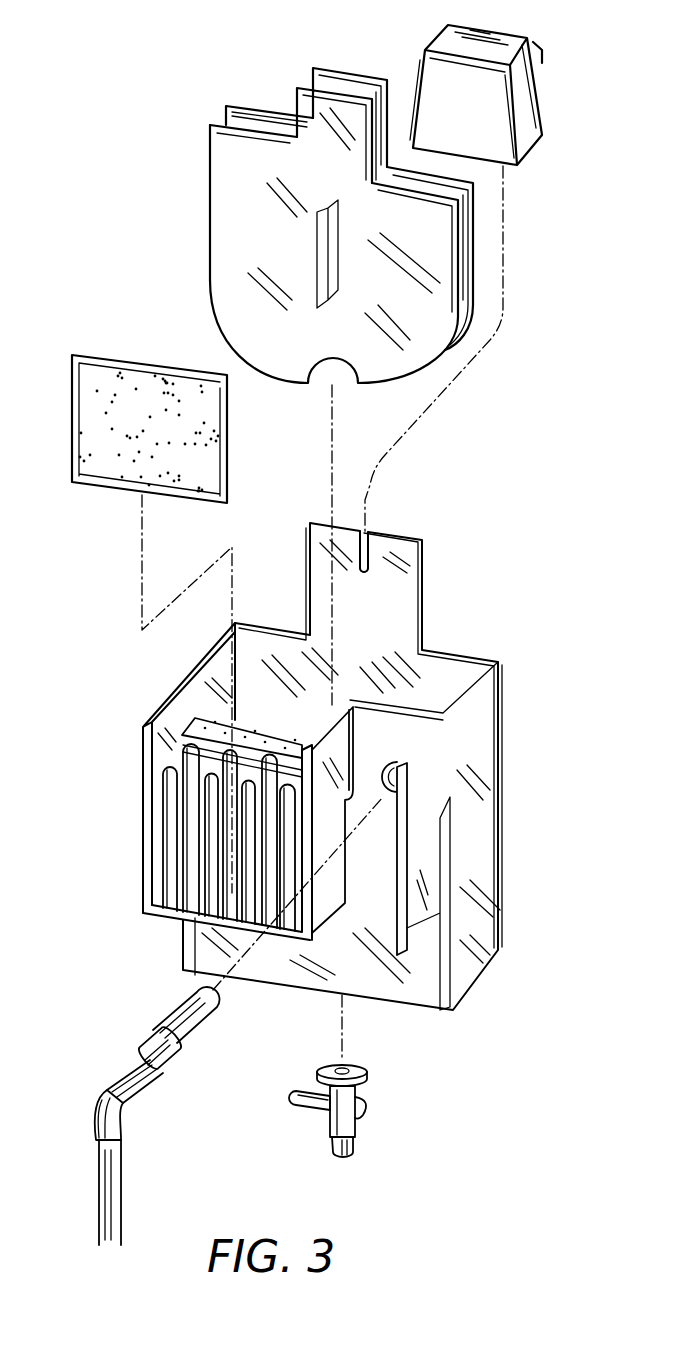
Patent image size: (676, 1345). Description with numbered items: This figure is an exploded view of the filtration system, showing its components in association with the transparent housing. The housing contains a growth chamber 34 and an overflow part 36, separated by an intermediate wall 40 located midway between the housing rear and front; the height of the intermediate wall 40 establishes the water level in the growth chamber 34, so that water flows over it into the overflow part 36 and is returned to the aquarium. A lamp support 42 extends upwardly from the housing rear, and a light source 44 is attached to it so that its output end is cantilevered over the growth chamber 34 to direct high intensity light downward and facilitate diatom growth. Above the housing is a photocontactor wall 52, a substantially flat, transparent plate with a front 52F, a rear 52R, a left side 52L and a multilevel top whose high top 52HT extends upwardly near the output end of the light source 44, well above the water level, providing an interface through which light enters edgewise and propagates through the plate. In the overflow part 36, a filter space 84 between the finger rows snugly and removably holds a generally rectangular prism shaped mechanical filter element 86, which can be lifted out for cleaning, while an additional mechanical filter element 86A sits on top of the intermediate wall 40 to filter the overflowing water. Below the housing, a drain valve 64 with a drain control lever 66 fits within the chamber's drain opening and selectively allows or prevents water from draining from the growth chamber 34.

The growth chamber 34 is at (319, 760).
The overflow part 36 is at (142, 817).
The intermediate wall 40 is at (383, 796).
The lamp support 42 is at (370, 544).
The light source 44 is at (537, 138).
The photocontactor wall 52 is at (347, 208).
The front 52F is at (220, 183).
The left side 52L is at (209, 240).
The rear 52R is at (460, 250).
The high top 52HT is at (353, 68).
The drain valve 64 is at (333, 1111).
The drain control lever 66 is at (305, 1112).
The filter space 84 is at (183, 882).
The mechanical filter element 86 is at (72, 421).
The additional mechanical filter element 86A is at (192, 725).